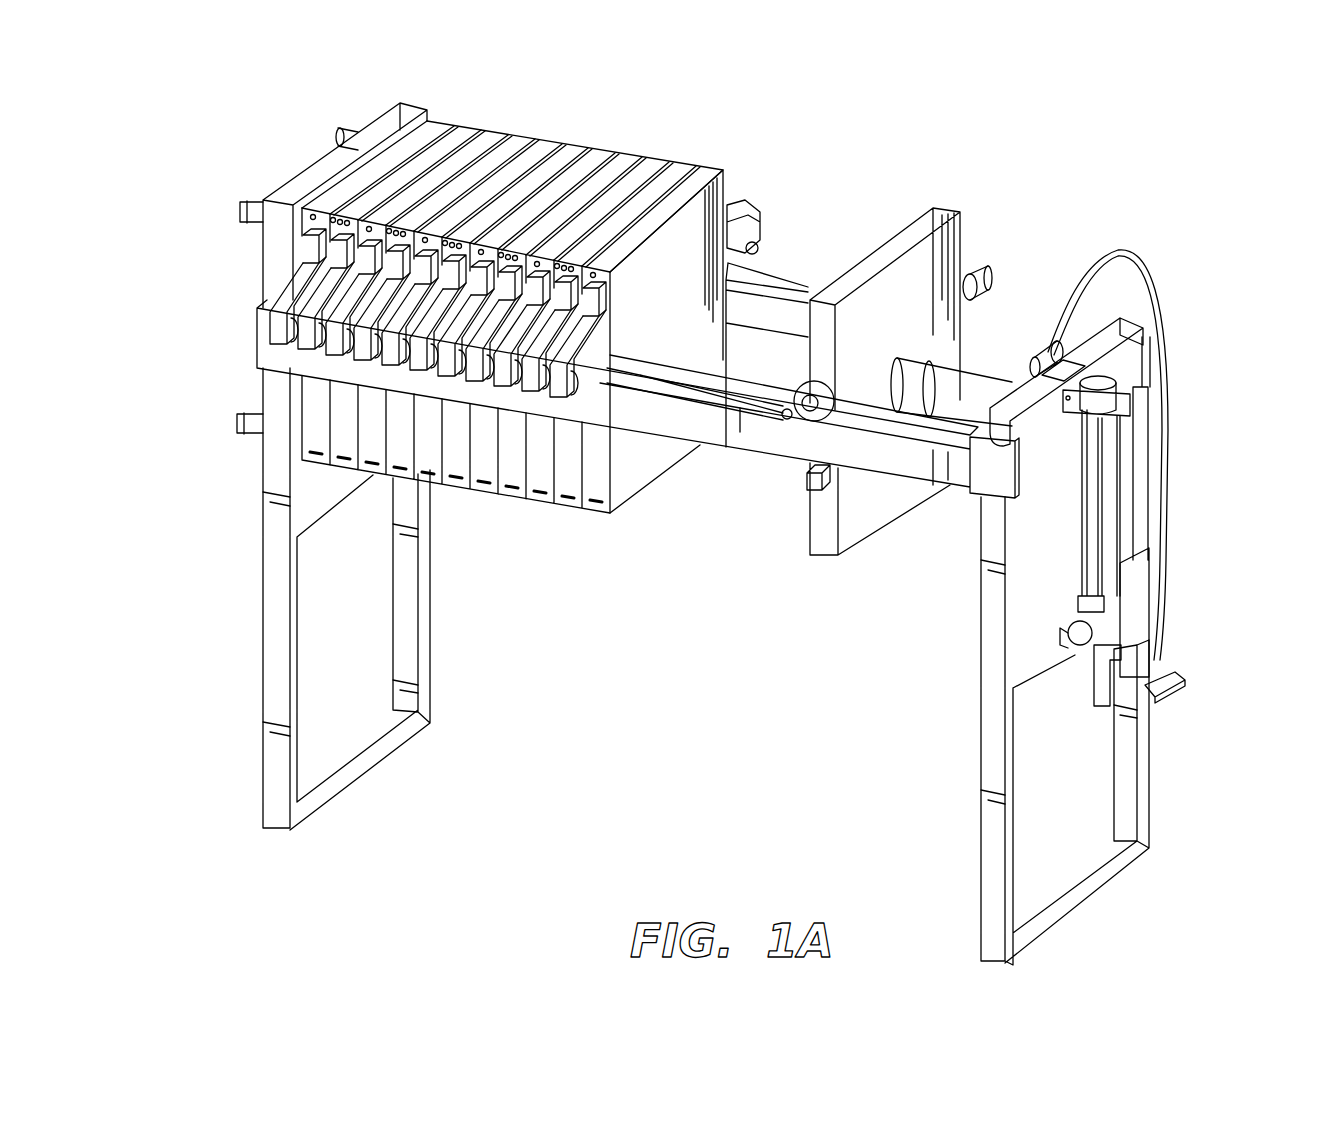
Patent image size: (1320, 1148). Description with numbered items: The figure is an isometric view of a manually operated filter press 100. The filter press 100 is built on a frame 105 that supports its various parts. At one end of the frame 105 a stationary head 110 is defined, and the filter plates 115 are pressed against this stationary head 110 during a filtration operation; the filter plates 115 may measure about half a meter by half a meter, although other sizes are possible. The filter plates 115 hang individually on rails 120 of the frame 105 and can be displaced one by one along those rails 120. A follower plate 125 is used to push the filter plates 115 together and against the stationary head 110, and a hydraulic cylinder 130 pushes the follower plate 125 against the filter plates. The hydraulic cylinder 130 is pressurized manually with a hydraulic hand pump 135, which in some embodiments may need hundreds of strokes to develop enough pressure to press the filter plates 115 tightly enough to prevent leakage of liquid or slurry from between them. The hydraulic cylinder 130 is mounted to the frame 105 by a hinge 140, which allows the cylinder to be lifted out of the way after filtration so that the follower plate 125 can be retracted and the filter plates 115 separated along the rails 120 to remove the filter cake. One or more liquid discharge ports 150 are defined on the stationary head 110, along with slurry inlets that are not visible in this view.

The filter press 100 is at (1075, 117).
The frame 105 is at (978, 708).
The stationary head 110 is at (413, 102).
The filter plates 115 is at (510, 133).
The rails 120 is at (773, 460).
The follower plate 125 is at (945, 208).
The hydraulic cylinder 130 is at (978, 372).
The hydraulic hand pump 135 is at (1128, 560).
The hinge 140 is at (1060, 333).
The liquid discharge ports 150 is at (237, 413).